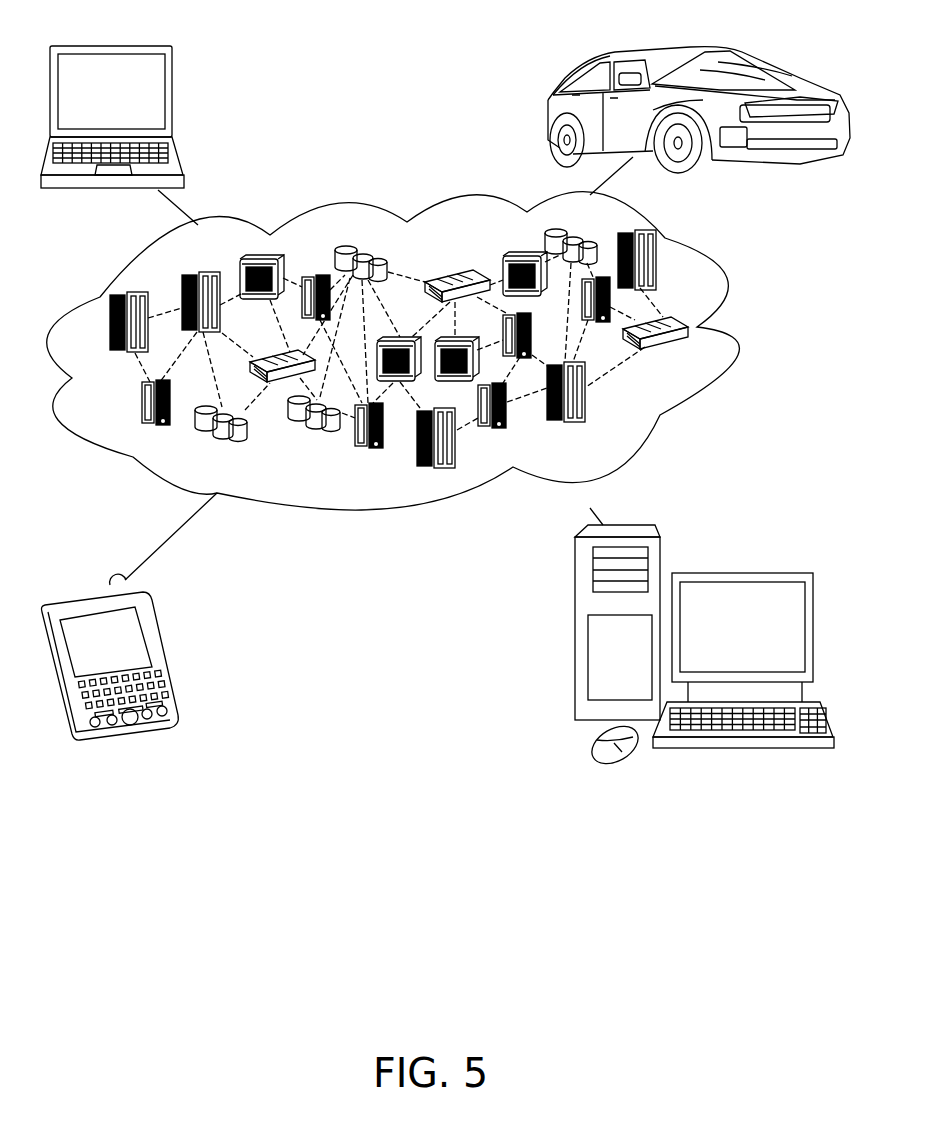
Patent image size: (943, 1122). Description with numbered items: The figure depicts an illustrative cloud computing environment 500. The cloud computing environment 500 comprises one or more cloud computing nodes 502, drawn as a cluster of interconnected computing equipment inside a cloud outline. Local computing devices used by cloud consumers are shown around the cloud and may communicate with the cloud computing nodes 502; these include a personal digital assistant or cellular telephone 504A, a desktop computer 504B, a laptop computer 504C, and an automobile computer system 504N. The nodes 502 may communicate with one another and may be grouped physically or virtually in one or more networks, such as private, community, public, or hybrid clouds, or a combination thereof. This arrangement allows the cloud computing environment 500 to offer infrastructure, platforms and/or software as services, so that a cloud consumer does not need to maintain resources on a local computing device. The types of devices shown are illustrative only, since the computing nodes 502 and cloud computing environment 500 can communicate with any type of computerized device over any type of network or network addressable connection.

The cloud computing environment 500 is at (710, 328).
The cloud computing nodes 502 is at (693, 356).
The personal digital assistant (PDA) or cellular telephone 504A is at (150, 624).
The desktop computer 504B is at (730, 572).
The laptop computer 504C is at (172, 80).
The automobile computer system 504N is at (548, 110).